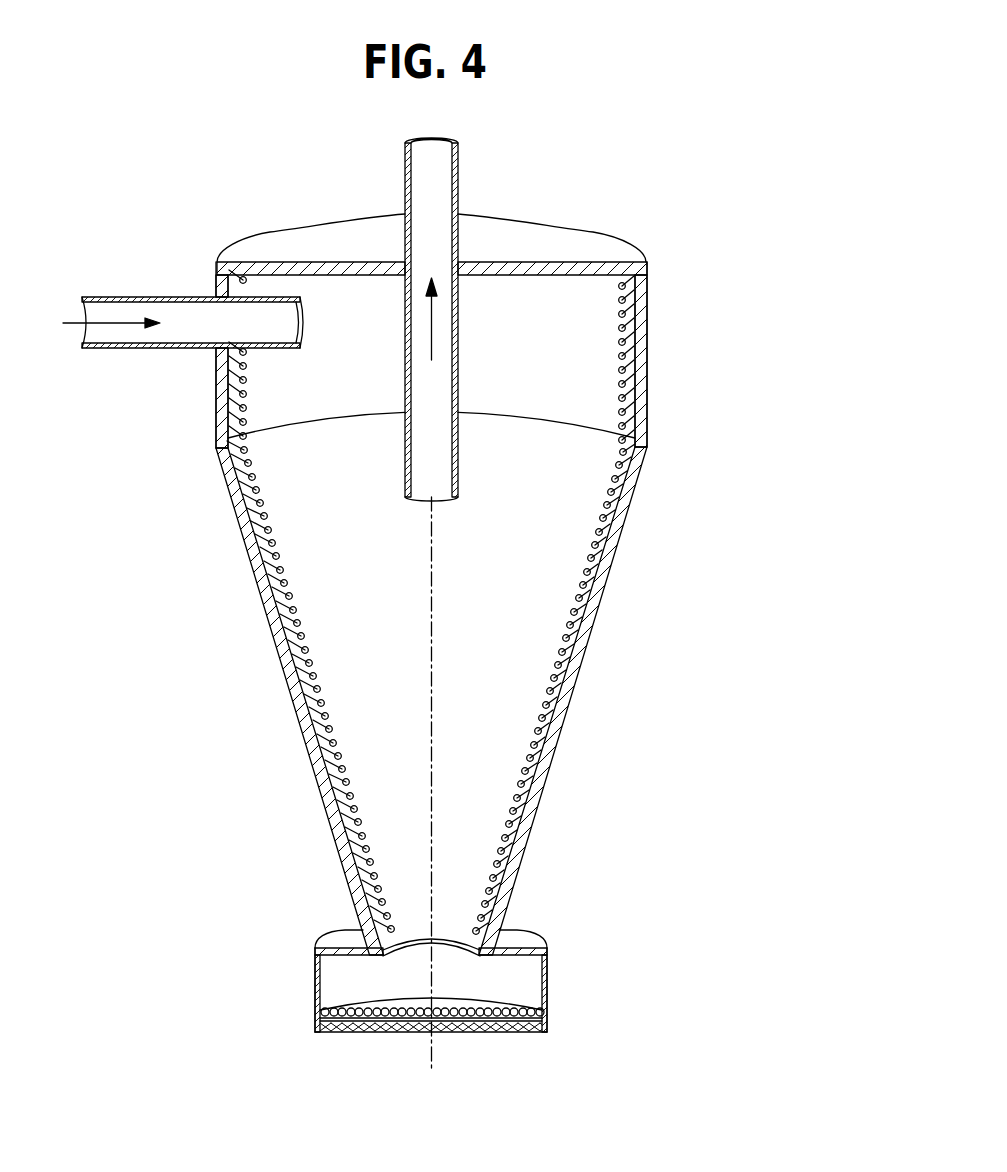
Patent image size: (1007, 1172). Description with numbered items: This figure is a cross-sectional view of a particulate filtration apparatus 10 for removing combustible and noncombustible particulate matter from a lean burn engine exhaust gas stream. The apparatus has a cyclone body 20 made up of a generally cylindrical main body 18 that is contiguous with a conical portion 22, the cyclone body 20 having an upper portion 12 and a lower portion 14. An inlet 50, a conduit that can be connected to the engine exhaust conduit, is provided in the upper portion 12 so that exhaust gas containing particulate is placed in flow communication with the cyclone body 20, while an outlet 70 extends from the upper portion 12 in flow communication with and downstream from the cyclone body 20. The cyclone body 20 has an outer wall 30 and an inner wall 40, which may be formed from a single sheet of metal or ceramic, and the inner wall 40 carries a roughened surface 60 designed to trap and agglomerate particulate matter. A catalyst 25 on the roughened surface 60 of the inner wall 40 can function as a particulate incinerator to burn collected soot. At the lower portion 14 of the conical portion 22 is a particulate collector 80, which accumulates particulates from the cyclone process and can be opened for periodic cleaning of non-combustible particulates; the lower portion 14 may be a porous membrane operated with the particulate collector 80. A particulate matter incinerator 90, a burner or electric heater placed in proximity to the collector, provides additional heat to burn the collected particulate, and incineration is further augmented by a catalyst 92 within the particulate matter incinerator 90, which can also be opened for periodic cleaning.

The particulate filtration apparatus 10 is at (650, 175).
The upper portion 12 is at (648, 262).
The lower portion 14 is at (495, 944).
The main body 18 is at (285, 397).
The cyclone body 20 is at (600, 388).
The conical portion 22 is at (500, 760).
The catalyst 25 is at (630, 337).
The outer wall 30 is at (608, 580).
The inner wall 40 is at (571, 622).
The inlet 50 is at (118, 297).
The roughened surface 60 is at (590, 545).
The outlet 70 is at (447, 190).
The particulate collector 80 is at (528, 989).
The particulate matter incinerator 90 is at (547, 1024).
The catalyst 92 is at (318, 1013).